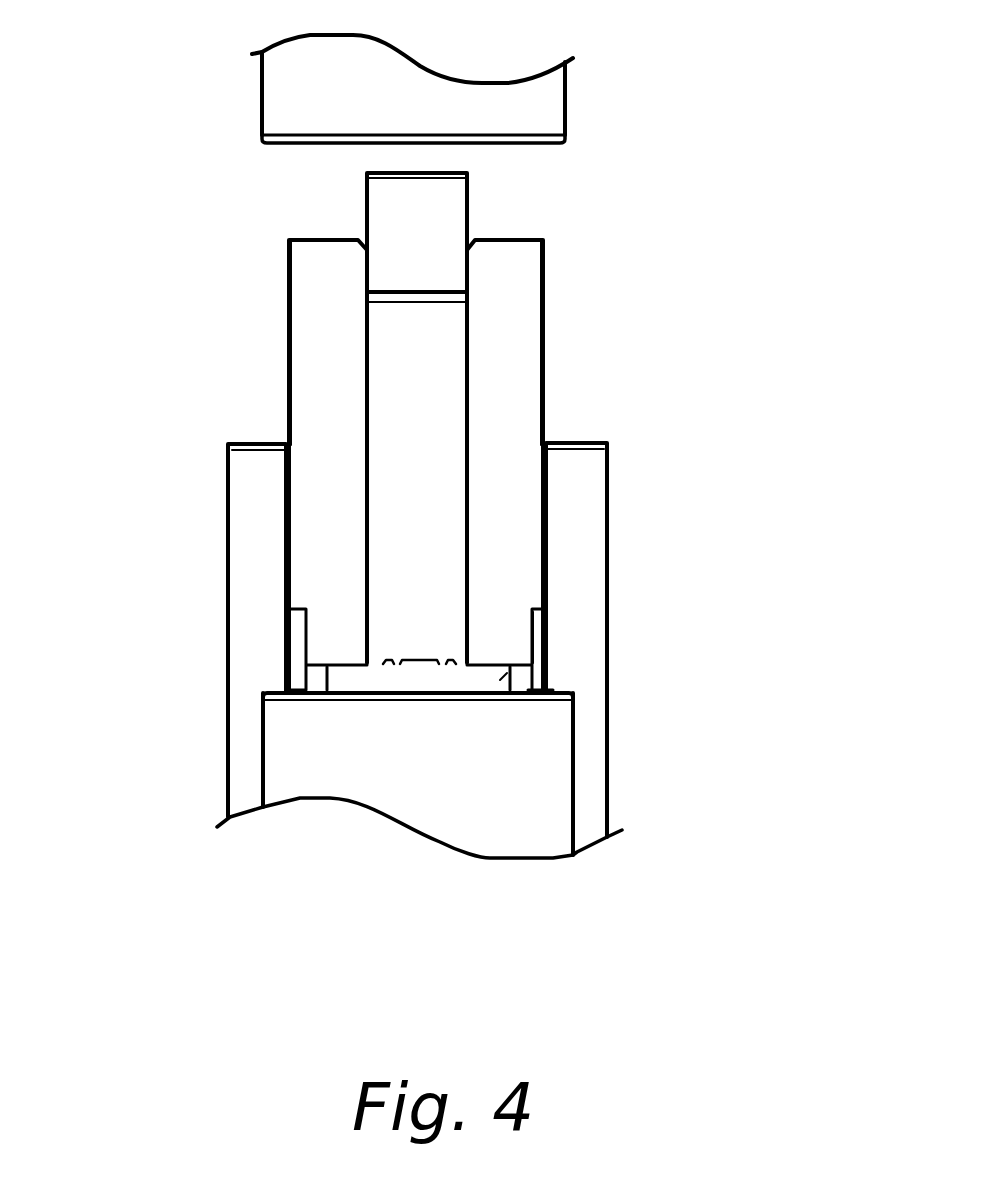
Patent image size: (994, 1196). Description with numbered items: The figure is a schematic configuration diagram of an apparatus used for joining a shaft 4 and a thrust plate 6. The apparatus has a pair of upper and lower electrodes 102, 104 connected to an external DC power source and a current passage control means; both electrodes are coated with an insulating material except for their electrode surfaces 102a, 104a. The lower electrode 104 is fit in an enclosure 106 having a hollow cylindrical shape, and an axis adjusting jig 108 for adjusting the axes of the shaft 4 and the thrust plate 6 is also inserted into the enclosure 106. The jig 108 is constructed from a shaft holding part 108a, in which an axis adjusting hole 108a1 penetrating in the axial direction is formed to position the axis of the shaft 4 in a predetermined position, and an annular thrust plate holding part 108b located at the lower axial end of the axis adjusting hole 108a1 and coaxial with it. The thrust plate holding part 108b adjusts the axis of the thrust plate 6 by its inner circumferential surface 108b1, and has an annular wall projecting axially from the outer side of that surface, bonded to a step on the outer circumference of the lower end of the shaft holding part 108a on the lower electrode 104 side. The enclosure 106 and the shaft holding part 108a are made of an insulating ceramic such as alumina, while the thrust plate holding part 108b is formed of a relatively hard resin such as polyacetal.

The upper electrode 102 is at (396, 134).
The electrode surface 102a is at (267, 143).
The shaft 4 is at (420, 214).
The axis adjusting jig 108 is at (454, 444).
The shaft holding part 108a is at (500, 322).
The axis adjusting hole 108a1 is at (457, 412).
The thrust plate holding part 108b is at (303, 678).
The inner circumferential surface 108b1 is at (525, 657).
The enclosure 106 is at (266, 540).
The lower electrode 104 is at (535, 753).
The electrode surface 104a is at (530, 688).
The thrust plate 6 is at (372, 675).